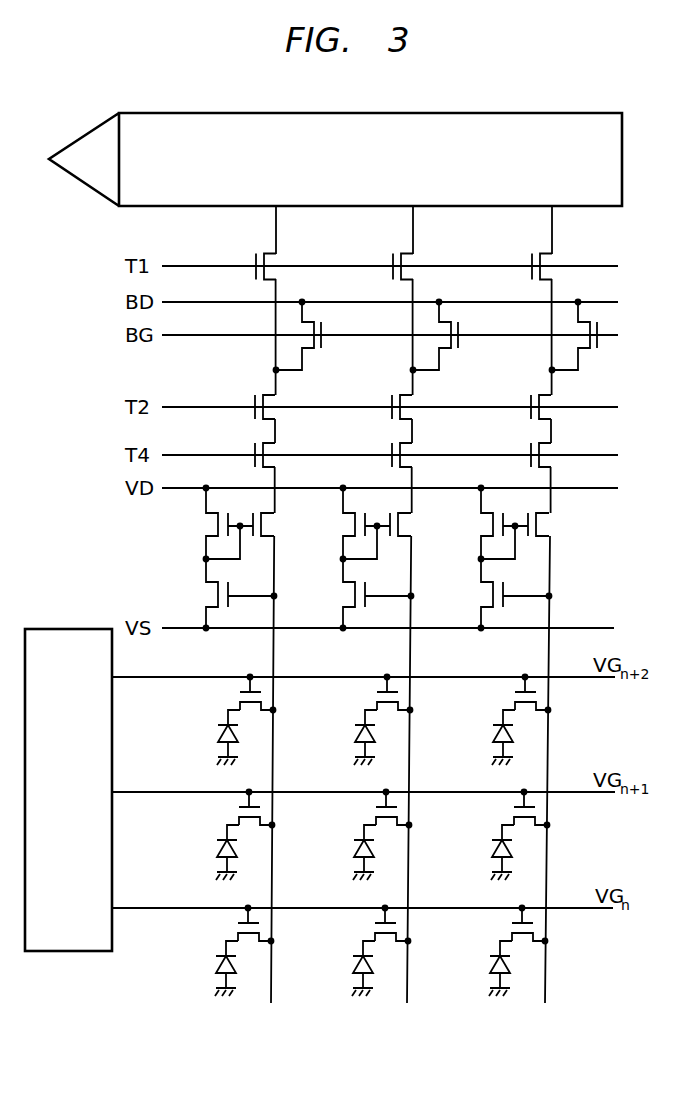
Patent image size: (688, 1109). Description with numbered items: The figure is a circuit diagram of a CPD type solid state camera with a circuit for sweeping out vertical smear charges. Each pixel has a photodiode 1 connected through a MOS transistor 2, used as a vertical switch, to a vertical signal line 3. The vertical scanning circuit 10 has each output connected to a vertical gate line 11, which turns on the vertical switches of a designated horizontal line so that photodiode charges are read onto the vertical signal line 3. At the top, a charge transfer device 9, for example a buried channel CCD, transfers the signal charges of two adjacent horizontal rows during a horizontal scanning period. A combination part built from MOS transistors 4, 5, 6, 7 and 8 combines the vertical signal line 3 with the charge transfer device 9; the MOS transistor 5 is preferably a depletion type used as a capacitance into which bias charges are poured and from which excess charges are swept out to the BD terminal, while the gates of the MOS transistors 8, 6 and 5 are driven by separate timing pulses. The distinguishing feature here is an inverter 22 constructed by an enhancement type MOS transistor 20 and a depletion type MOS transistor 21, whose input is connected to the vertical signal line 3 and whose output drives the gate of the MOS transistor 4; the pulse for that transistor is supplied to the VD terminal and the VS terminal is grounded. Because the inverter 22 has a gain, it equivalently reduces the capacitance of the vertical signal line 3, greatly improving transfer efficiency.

The photodiode 1 is at (487, 968).
The MOS transistor used as a vertical switch 2 is at (527, 945).
The vertical signal line 3 is at (548, 968).
The MOS transistor 4 is at (551, 526).
The MOS transistor 5 is at (553, 461).
The MOS transistor 6 is at (553, 414).
The MOS transistor 7 is at (583, 356).
The MOS transistor 8 is at (559, 256).
The charge transfer device 9 is at (622, 168).
The vertical scanning circuit 10 is at (69, 628).
The vertical gate line 11 is at (158, 913).
The enhancement type MOS transistor 20 is at (483, 596).
The depletion type MOS transistor 21 is at (483, 526).
The inverter 22 is at (517, 573).